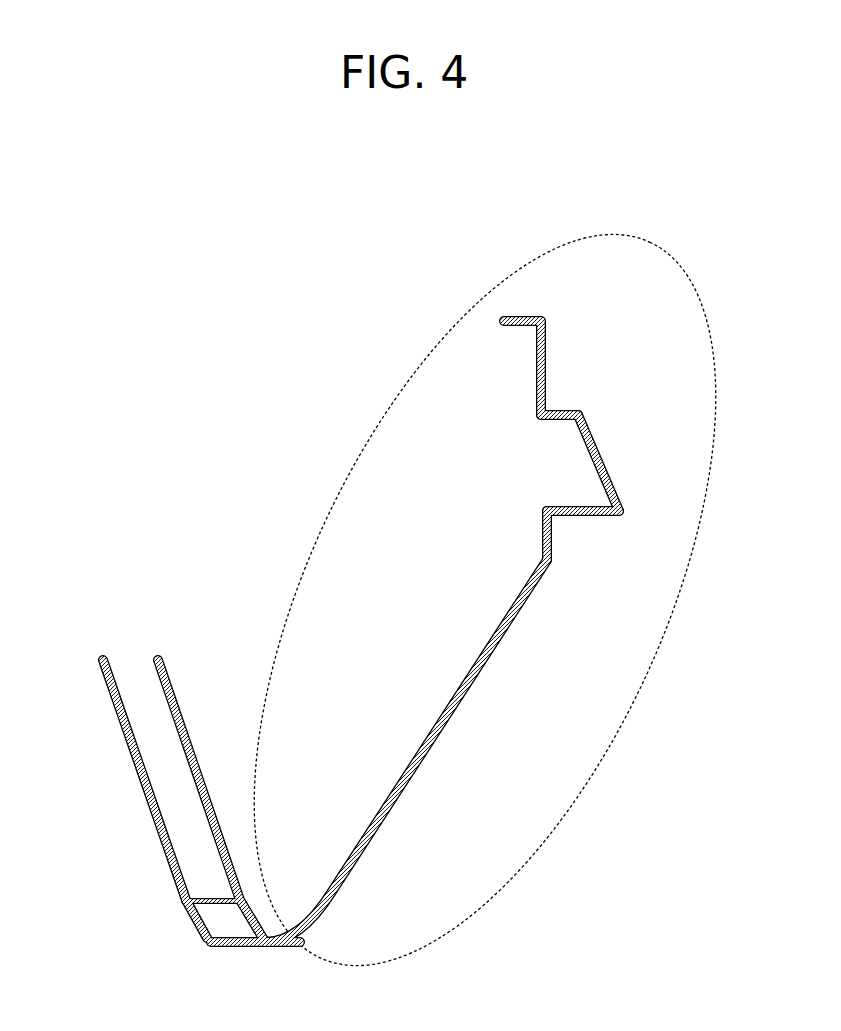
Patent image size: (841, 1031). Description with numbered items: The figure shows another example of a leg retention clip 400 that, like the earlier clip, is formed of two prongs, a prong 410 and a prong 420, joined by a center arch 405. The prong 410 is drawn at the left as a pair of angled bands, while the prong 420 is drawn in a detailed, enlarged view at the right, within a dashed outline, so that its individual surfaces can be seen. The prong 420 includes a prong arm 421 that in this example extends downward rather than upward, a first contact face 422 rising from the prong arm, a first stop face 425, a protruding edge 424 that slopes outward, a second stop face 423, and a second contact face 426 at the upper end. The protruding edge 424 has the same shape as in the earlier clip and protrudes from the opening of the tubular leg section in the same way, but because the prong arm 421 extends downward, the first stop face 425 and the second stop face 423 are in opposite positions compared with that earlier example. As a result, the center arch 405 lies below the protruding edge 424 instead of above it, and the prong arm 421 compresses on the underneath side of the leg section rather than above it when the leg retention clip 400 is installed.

The leg retention clip 400 is at (97, 134).
The center arch 405 is at (243, 949).
The prong 410 is at (116, 701).
The prong 420 is at (623, 715).
The prong arm 421 is at (444, 734).
The first contact face 422 is at (552, 562).
The second stop face 423 is at (566, 410).
The protruding edge 424 is at (603, 460).
The first stop face 425 is at (595, 520).
The second contact face 426 is at (551, 370).